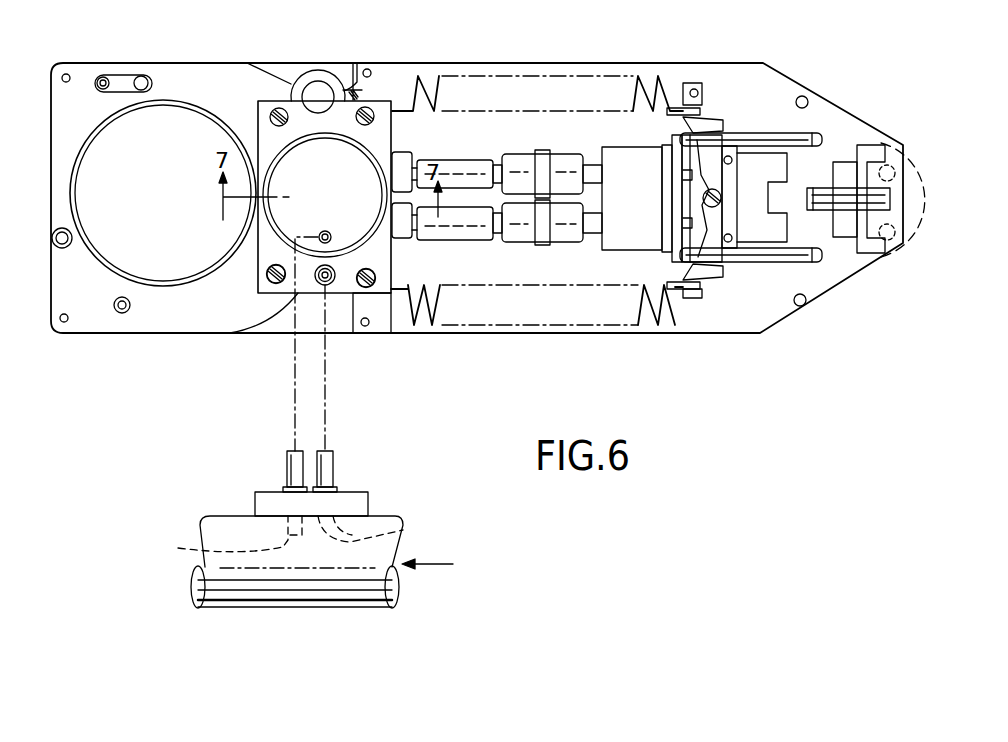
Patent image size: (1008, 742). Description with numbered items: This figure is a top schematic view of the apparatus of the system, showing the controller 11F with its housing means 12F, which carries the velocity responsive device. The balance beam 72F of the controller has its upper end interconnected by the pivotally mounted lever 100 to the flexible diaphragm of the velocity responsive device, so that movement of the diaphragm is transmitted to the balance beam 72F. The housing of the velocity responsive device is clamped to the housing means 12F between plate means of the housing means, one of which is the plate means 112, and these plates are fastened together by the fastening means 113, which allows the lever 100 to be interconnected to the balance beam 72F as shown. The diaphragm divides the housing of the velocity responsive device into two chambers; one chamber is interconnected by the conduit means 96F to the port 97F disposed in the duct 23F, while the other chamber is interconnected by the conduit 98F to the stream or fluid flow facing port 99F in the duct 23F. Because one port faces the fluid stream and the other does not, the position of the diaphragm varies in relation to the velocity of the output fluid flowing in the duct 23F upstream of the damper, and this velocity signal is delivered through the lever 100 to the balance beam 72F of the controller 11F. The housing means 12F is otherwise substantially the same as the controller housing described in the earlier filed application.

The controller 11F is at (842, 72).
The housing means 12F is at (738, 72).
The lever 100 is at (351, 78).
The balance beam 72F is at (361, 88).
The plate means 112 is at (268, 142).
The fastening means 113 is at (270, 281).
The conduit means 96F is at (295, 398).
The conduit 98F is at (325, 425).
The port 97F is at (200, 548).
The fluid flow facing port 99F is at (403, 530).
The duct 23F is at (292, 607).